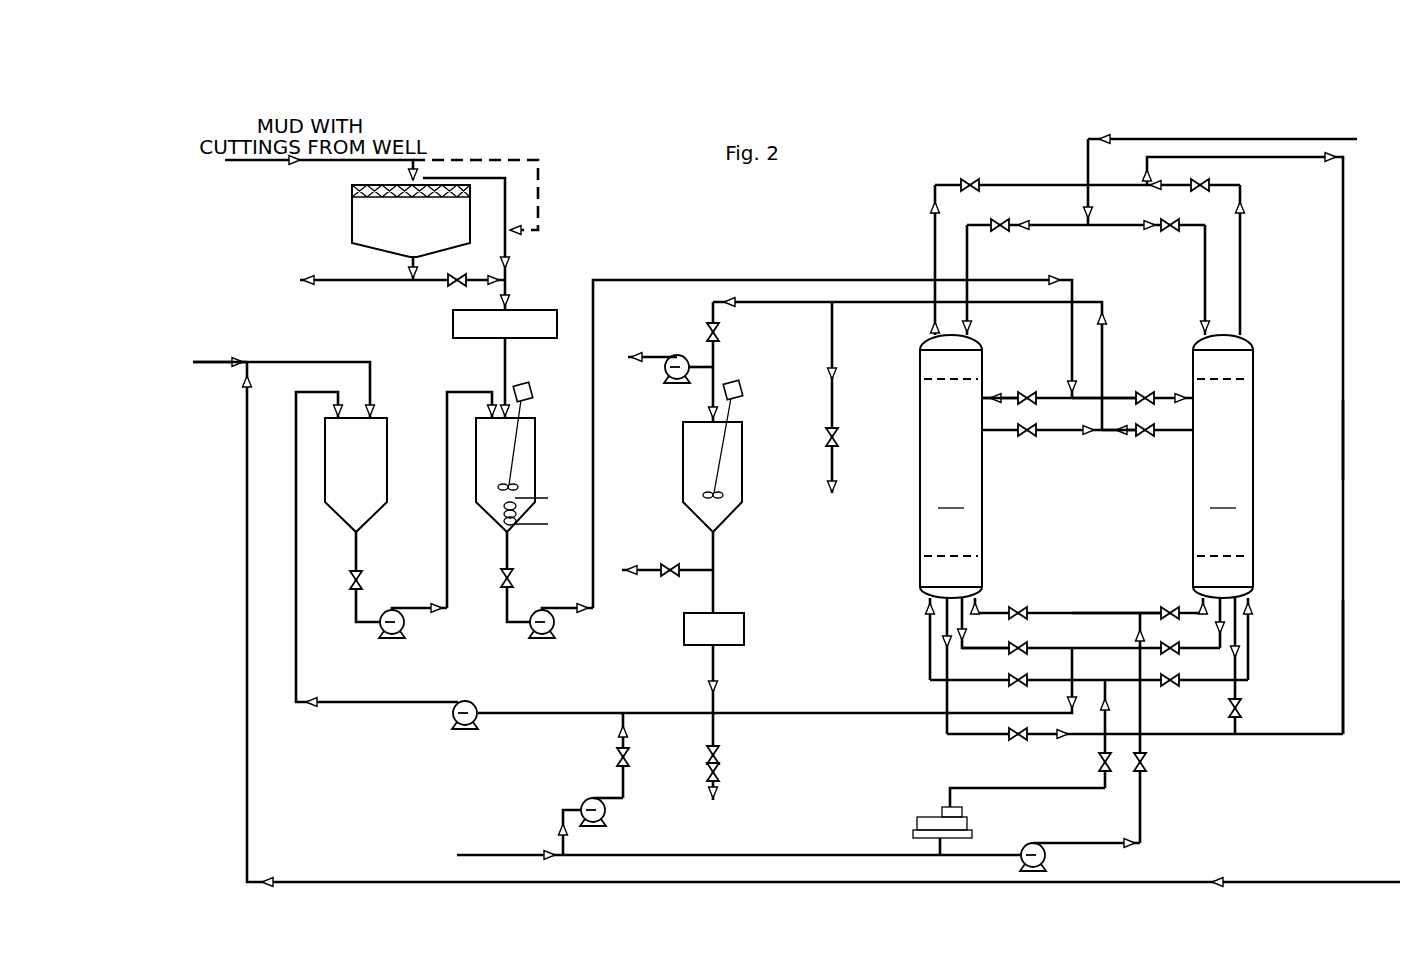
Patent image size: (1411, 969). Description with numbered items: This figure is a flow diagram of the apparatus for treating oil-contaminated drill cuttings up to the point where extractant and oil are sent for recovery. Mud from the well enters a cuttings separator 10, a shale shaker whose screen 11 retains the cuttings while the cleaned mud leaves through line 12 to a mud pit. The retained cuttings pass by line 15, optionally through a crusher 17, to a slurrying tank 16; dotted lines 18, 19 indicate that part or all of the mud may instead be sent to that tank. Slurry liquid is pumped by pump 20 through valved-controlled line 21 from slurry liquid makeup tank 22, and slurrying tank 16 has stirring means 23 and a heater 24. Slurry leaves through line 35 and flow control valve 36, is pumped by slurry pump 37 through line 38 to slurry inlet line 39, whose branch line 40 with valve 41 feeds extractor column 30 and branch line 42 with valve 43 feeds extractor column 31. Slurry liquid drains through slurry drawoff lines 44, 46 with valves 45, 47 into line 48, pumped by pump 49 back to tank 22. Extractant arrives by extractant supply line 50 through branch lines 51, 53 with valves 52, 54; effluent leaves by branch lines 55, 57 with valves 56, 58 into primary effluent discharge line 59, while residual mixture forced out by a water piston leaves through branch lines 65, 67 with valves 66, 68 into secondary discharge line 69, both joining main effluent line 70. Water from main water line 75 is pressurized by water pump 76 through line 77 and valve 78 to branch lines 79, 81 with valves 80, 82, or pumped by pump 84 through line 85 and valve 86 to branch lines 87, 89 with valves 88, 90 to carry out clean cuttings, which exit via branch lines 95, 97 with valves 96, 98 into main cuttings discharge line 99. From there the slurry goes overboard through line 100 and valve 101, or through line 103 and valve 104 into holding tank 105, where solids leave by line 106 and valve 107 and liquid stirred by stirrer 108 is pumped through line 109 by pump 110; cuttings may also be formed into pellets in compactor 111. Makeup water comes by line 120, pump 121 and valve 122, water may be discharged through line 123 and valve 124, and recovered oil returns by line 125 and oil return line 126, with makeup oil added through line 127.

The cuttings separator 10 is at (362, 217).
The screen 11 is at (352, 191).
The line 12 is at (360, 282).
The line 15 is at (511, 250).
The slurrying tank 16 is at (528, 470).
The crusher 17 is at (518, 312).
The dotted line 18 is at (437, 286).
The dotted line 19 is at (503, 158).
The pump 20 is at (395, 636).
The valved-controlled line 21 is at (447, 462).
The slurry liquid makeup tank 22 is at (378, 507).
The stirring means 23 is at (530, 386).
The heater 24 is at (525, 527).
The extractor column 30 is at (951, 466).
The extractor column 31 is at (1223, 466).
The line 35 is at (505, 549).
The flow control valve 36 is at (517, 580).
The slurry pump 37 is at (543, 636).
The line 38 is at (594, 470).
The slurry inlet line 39 is at (1048, 392).
The branch line 40 is at (1004, 395).
The valve 41 is at (1028, 393).
The branch line 42 is at (1126, 395).
The valve 43 is at (1150, 393).
The slurry drawoff line 44 is at (962, 626).
The valve 45 is at (1018, 643).
The slurry drawoff line 46 is at (1215, 624).
The valve 47 is at (1172, 650).
The line 48 is at (740, 712).
The pump 49 is at (478, 708).
The extractant supply line 50 is at (1230, 139).
The branch line 51 is at (969, 262).
The valve 52 is at (1005, 222).
The branch line 53 is at (1112, 226).
The valve 54 is at (1170, 232).
The branch line 55 is at (945, 620).
The valve 56 is at (1015, 738).
The branch line 57 is at (1240, 694).
The valve 58 is at (1245, 710).
The primary effluent discharge line 59 is at (1345, 668).
The branch line 65 is at (934, 232).
The valve 66 is at (975, 180).
The branch line 67 is at (1243, 235).
The valve 68 is at (1208, 184).
The secondary discharge line 69 is at (1345, 235).
The main effluent line 70 is at (1345, 440).
The main water line 75 is at (740, 853).
The high-discharge-pressure water pump 76 is at (930, 815).
The line 77 is at (988, 790).
The valve 78 is at (1098, 762).
The branch line 79 is at (930, 650).
The valve 80 is at (1022, 678).
The branch line 81 is at (1250, 650).
The valve 82 is at (1172, 686).
The pump 84 is at (1048, 850).
The line 85 is at (1145, 810).
The valve 86 is at (1150, 762).
The branch line 87 is at (1037, 612).
The valve 88 is at (1018, 608).
The branch line 89 is at (1146, 610).
The valve 90 is at (1174, 608).
The branch line 95 is at (1057, 435).
The valve 96 is at (1022, 437).
The branch line 97 is at (1132, 437).
The valve 98 is at (1152, 437).
The main cuttings discharge line 99 is at (793, 305).
The line 100 is at (835, 346).
The valve 101 is at (840, 432).
The line 103 is at (712, 385).
The valve 104 is at (722, 336).
The holding tank 105 is at (730, 466).
The line 106 is at (650, 572).
The valve 107 is at (668, 565).
The stirrer 108 is at (742, 395).
The line 109 is at (650, 360).
The pump 110 is at (677, 355).
The compactor 111 is at (728, 618).
The line 120 is at (560, 838).
The pump 121 is at (606, 813).
The valve 122 is at (612, 755).
The line 123 is at (727, 748).
The valve 124 is at (727, 770).
The line 125 is at (250, 795).
The oil return line 126 is at (283, 360).
The line 127 is at (200, 360).